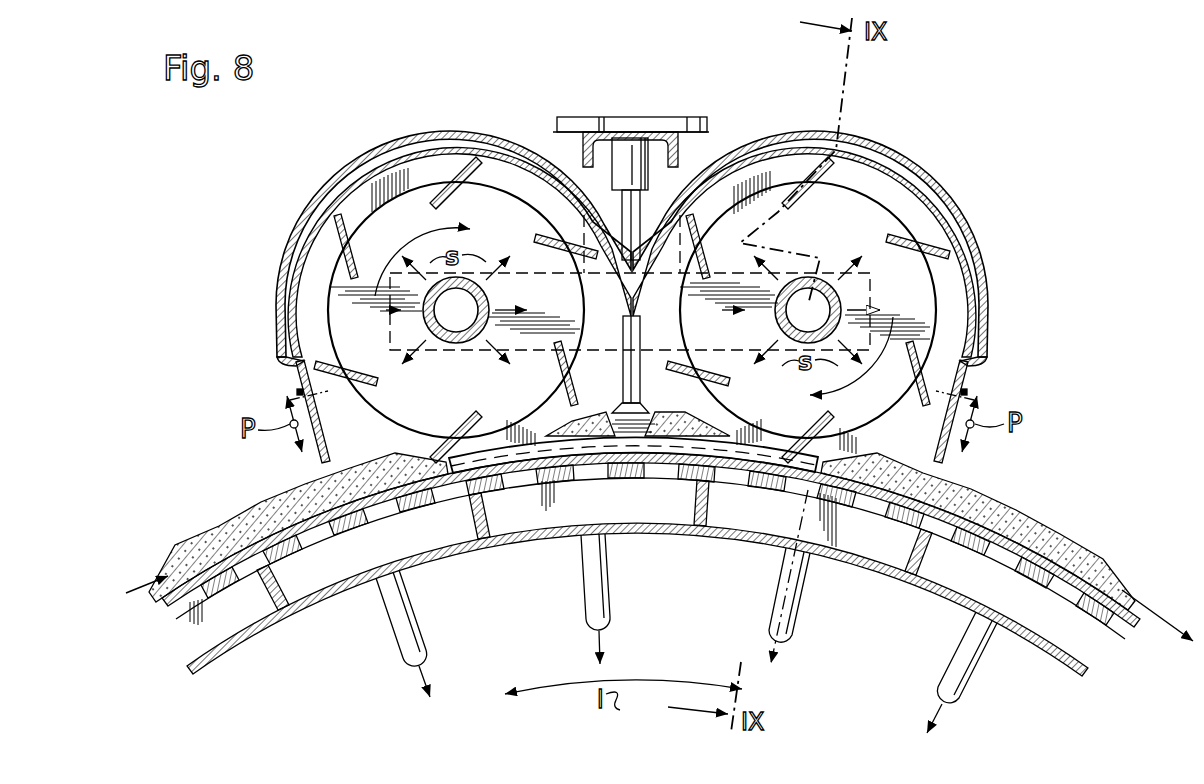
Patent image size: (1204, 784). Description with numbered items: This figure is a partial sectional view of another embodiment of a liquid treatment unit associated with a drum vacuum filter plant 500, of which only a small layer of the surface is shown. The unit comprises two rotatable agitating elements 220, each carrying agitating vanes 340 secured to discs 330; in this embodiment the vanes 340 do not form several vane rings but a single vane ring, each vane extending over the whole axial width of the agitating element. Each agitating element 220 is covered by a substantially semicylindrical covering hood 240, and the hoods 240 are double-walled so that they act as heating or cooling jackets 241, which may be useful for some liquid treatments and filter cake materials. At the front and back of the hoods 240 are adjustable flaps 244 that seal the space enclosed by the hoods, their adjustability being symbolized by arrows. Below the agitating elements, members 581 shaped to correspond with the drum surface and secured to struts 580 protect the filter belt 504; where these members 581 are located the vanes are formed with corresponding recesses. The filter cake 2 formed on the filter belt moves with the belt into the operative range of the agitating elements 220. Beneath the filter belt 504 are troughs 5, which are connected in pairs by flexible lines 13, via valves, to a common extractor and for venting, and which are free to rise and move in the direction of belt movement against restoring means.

The drum vacuum filter plant 500 is at (518, 105).
The semicylindrical covering hood 240 is at (307, 216).
The heating or cooling jacket 241 is at (296, 268).
The adjustable flap 244 is at (298, 390).
The agitating element 220 is at (350, 394).
The agitating vane 340 is at (350, 262).
The disc 330 is at (630, 303).
The strut 580 is at (634, 388).
The protective member 581 is at (733, 462).
The trough 5 is at (534, 536).
The filter belt 504 is at (1096, 592).
The flexible line 13 is at (404, 628).
The filter cake 2 is at (1020, 508).